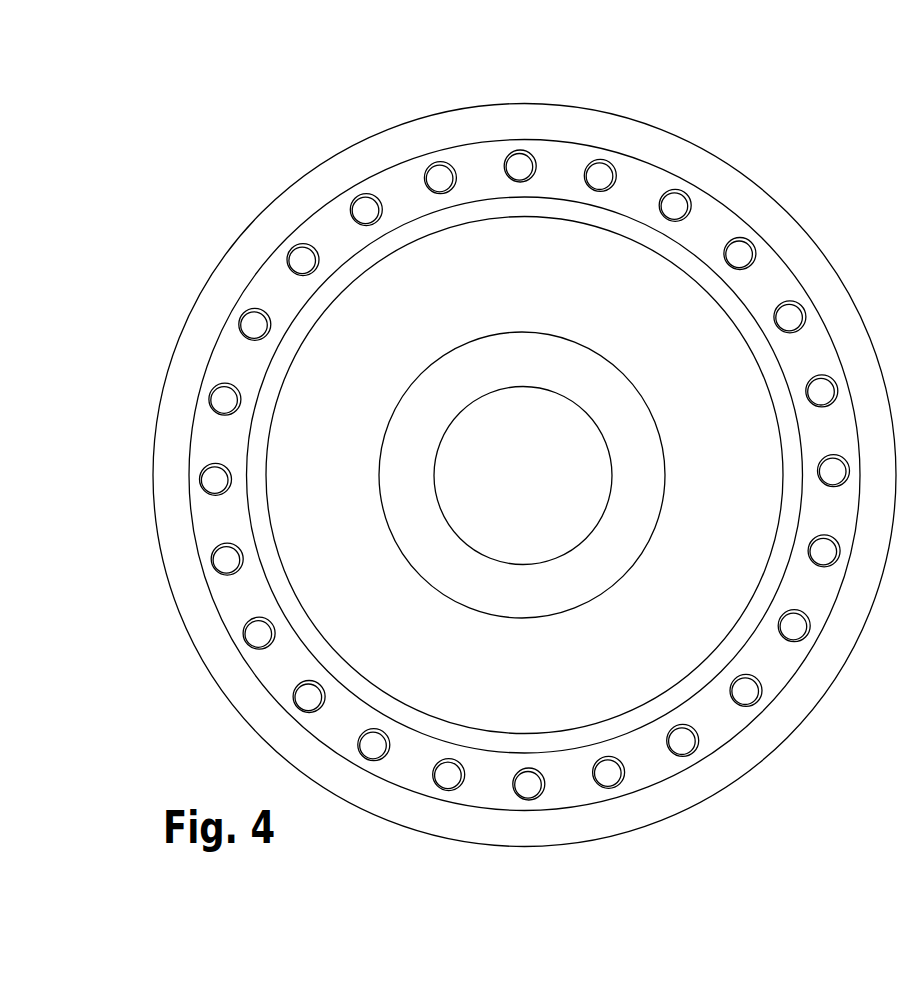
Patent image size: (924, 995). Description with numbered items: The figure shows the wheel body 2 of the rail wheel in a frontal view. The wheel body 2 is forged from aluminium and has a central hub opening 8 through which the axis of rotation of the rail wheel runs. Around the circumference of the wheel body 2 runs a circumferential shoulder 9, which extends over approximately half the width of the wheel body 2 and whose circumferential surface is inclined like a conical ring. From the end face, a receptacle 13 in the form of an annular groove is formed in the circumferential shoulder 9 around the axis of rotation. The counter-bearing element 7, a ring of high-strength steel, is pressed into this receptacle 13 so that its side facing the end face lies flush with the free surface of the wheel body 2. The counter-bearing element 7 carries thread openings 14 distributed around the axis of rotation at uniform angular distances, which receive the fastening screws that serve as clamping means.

The wheel body 2 is at (663, 632).
The counter-bearing element 7 is at (323, 230).
The central hub opening 8 is at (531, 489).
The circumferential shoulder 9 is at (363, 168).
The receptacle 13 is at (577, 140).
The thread openings 14 is at (438, 177).